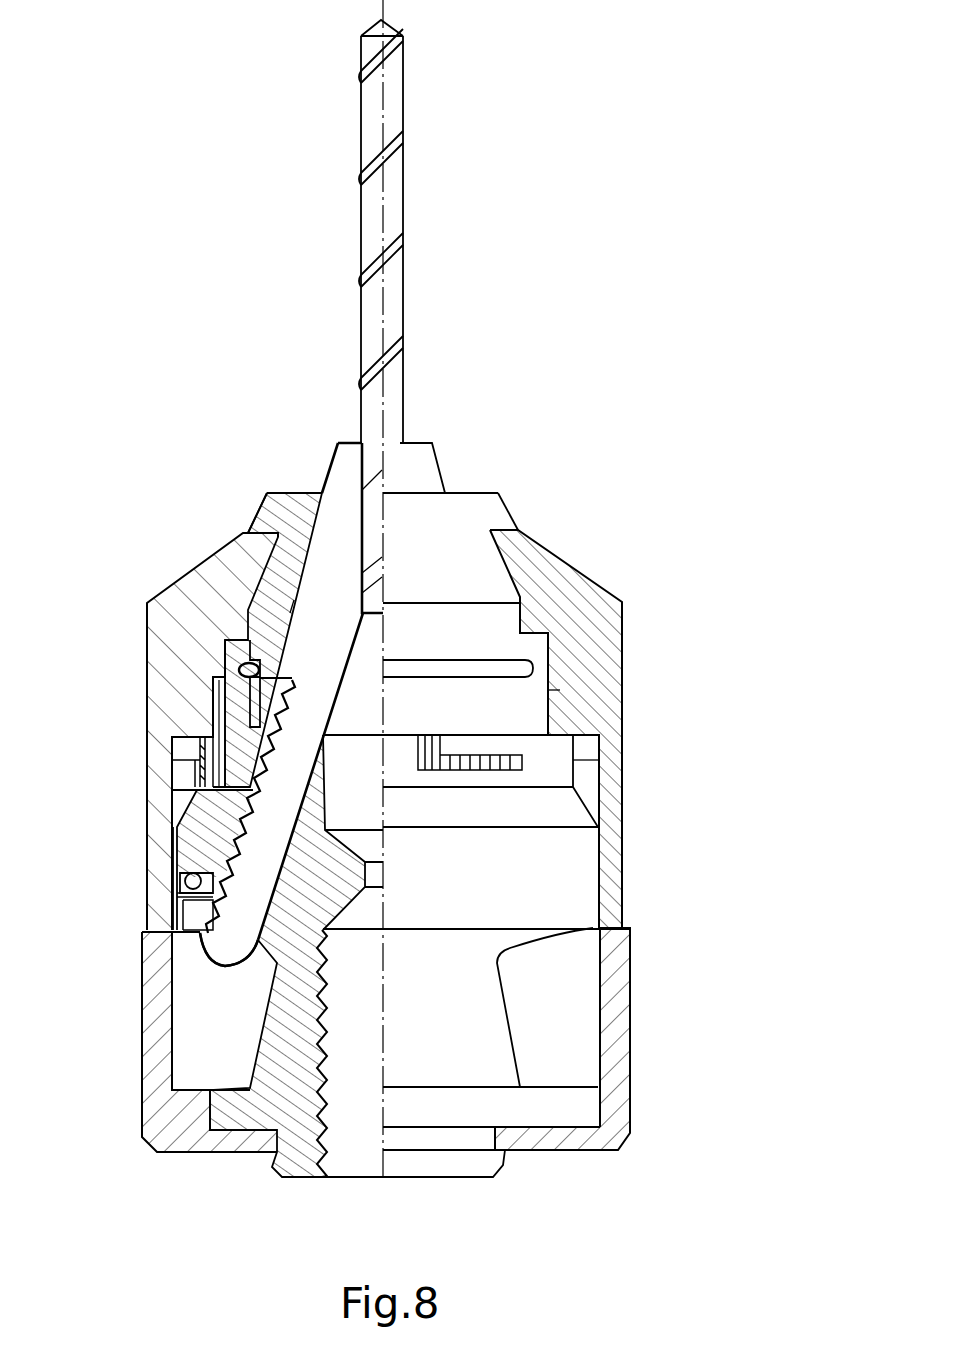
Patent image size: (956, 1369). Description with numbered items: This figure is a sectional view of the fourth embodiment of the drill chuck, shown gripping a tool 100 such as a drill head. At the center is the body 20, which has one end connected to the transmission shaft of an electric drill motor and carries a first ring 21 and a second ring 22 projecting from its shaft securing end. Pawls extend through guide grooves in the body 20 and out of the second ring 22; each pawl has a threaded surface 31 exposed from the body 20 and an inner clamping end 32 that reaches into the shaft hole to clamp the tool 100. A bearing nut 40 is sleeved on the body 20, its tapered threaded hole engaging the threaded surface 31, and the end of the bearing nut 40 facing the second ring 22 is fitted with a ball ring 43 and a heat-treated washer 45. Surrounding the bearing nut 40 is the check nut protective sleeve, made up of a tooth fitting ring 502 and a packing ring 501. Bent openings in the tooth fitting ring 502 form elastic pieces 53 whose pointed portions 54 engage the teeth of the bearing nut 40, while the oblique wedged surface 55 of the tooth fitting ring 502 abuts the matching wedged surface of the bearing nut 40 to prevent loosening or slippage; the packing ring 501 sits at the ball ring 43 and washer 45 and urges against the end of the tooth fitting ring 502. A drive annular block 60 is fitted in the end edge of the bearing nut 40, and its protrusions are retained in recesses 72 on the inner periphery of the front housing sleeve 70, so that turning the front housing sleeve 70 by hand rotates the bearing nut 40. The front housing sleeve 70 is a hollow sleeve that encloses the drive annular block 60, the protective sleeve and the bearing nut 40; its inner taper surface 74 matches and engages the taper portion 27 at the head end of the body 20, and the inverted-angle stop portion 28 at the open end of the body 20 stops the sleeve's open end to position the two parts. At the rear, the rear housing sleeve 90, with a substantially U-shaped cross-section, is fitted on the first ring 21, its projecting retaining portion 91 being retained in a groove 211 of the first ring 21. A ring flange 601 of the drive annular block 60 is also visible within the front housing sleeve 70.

The drill bit 100 is at (405, 260).
The taper portion 27 is at (290, 560).
The inverted-angle stop portion 28 is at (260, 520).
The front sleeve inclined surface 74 is at (280, 560).
The front housing sleeve 70 is at (205, 578).
The body 20 is at (305, 620).
The clamping end 32 is at (300, 620).
The drive annular block 60 is at (290, 665).
The threaded surface 31 is at (262, 672).
The recesses 72 is at (236, 690).
The ring flange 601 is at (212, 735).
The elastic piece 53 is at (230, 760).
The oblique wedged surface 55 is at (210, 790).
The bearing nut 40 is at (200, 830).
The tooth fitting ring 502 is at (180, 855).
The ball ring 43 is at (185, 882).
The heat-treated washer 45 is at (195, 905).
The packing ring 501 is at (200, 940).
The second ring 22 is at (215, 960).
The rear housing sleeve 90 is at (160, 1030).
The projecting retaining portion 91 is at (190, 1110).
The groove 211 is at (225, 1140).
The first ring 21 is at (290, 1110).
The pointed portion 54 is at (445, 745).